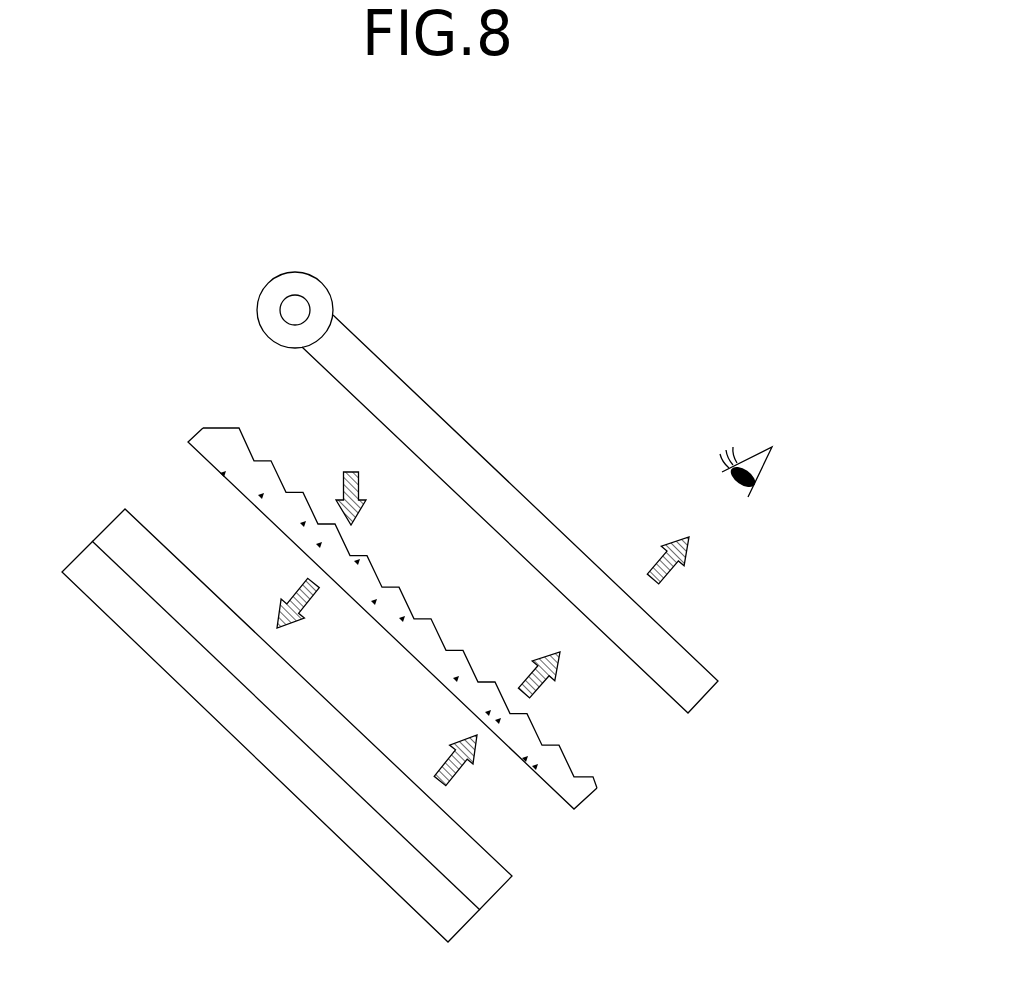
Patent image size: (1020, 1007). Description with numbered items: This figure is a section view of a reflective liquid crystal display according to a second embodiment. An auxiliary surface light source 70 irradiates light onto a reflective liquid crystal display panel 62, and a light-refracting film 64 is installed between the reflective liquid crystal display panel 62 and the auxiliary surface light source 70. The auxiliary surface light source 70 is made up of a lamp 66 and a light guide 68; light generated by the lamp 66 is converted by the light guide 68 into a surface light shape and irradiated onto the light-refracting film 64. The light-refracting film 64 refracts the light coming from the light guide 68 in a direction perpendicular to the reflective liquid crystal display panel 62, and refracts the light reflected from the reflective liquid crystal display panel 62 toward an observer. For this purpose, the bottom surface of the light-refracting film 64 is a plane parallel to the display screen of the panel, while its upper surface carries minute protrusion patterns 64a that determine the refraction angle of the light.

The reflective liquid crystal display panel 62 is at (495, 893).
The light-refracting film 64 is at (422, 630).
The minute protrusion patterns 64a is at (567, 762).
The lamp 66 is at (297, 304).
The light guide 68 is at (705, 697).
The auxiliary surface light source 70 is at (497, 595).